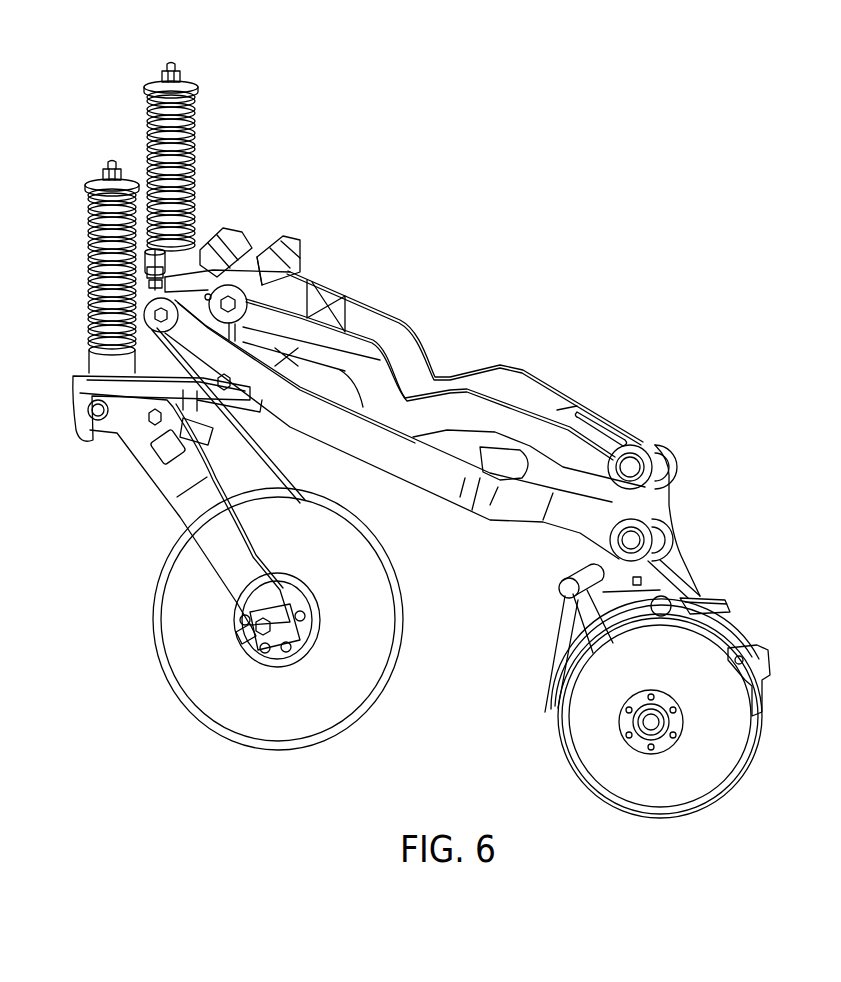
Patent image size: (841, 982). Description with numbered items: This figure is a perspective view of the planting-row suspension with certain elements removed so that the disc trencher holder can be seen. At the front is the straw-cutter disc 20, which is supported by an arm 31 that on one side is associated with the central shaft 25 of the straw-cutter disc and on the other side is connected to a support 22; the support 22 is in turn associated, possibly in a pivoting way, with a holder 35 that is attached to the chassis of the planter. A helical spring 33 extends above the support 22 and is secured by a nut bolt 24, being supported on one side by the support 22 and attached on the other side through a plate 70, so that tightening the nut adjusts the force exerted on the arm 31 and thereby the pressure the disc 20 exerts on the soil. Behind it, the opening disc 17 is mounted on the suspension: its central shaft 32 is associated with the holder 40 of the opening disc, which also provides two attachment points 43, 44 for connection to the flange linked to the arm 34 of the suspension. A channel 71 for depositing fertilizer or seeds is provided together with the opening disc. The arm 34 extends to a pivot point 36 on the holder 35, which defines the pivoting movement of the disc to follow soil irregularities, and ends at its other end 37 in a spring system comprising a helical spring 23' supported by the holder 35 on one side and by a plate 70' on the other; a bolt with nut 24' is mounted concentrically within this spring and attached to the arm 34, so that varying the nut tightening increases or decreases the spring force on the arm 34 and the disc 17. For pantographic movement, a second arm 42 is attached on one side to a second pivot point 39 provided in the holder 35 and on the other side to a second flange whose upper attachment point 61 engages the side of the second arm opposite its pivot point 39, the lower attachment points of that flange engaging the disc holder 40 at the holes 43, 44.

The opening disc 17 is at (688, 772).
The straw-cutter disc 20 is at (228, 700).
The support 22 is at (77, 393).
The helical spring 23' is at (204, 171).
The nut bolt 24 is at (102, 147).
The nut 24' is at (203, 62).
The central shaft 25 is at (266, 630).
The arm 31 is at (170, 473).
The central shaft 32 is at (649, 724).
The helical spring 33 is at (96, 336).
The arm 34 is at (515, 503).
The holder 35 is at (293, 270).
The pivot point 36 is at (231, 382).
The other end 37 is at (157, 315).
The second pivot point 39 is at (228, 301).
The holder of the opening disc 40 is at (707, 645).
The second arm 42 is at (492, 410).
The attachment point 43 is at (569, 590).
The attachment point 44 is at (662, 605).
The upper attachment point 61 is at (631, 467).
The plate 70 is at (88, 175).
The plate 70' is at (145, 76).
The channel 71 is at (712, 605).